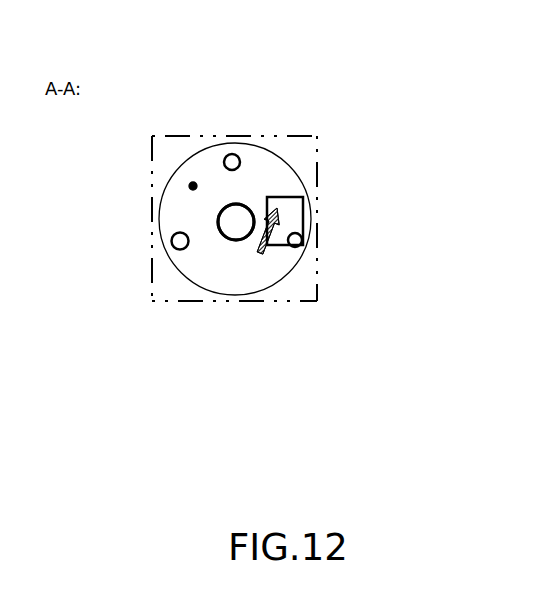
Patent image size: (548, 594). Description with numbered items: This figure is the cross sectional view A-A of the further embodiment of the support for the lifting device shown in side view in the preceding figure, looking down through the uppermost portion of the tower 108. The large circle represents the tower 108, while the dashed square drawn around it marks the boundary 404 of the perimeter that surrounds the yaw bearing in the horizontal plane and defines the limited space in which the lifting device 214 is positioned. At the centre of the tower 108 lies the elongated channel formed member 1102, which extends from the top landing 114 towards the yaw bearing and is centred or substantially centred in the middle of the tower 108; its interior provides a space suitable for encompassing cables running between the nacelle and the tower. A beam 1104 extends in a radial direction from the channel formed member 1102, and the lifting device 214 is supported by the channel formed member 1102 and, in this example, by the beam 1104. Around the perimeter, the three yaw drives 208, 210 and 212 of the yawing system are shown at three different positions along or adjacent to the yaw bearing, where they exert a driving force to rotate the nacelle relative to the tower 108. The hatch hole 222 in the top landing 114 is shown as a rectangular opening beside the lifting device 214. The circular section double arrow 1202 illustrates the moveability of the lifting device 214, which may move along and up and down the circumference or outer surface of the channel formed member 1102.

The tower 108 is at (160, 188).
The top landing 114 is at (193, 182).
The yaw drive 208 is at (217, 216).
The yaw drive 210 is at (232, 154).
The yaw drive 212 is at (302, 240).
The lifting device 214 is at (273, 246).
The hatch hole 222 is at (303, 197).
The boundary 404 is at (320, 282).
The elongated channel formed member 1102 is at (176, 241).
The beam 1104 is at (253, 226).
The circular section double arrow 1202 is at (259, 254).